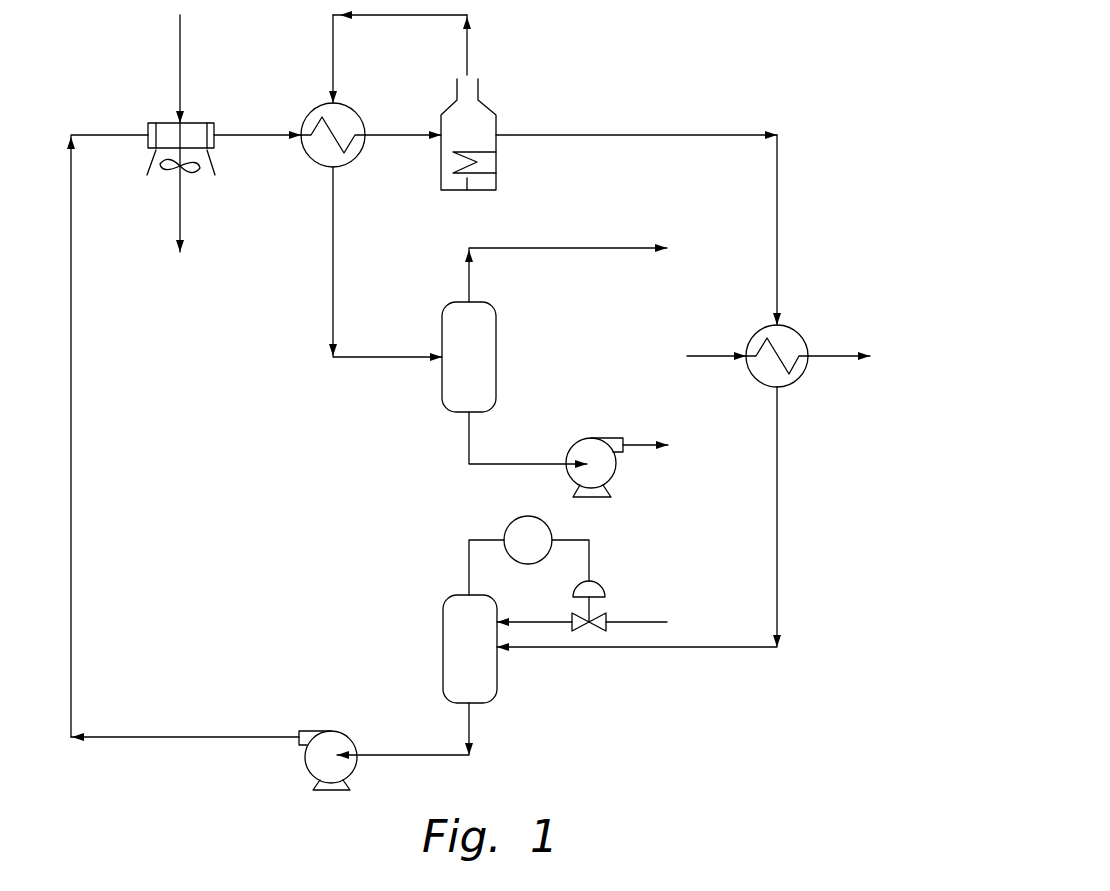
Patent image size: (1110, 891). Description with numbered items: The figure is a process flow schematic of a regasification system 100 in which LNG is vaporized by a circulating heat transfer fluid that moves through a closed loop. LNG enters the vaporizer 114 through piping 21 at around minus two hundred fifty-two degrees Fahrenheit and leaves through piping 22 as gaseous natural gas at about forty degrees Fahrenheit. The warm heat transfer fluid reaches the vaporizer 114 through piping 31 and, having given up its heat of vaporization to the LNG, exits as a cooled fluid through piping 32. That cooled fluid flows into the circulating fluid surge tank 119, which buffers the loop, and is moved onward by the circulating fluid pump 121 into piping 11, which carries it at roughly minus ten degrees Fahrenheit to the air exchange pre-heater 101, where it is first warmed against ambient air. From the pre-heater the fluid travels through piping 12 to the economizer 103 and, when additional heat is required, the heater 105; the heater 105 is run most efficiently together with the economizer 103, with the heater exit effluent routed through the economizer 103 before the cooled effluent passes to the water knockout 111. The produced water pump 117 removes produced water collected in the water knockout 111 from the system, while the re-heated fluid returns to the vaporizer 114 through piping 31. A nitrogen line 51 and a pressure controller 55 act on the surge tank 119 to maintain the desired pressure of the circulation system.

The regasification system 100 is at (704, 37).
The piping 11 is at (123, 133).
The piping 12 is at (253, 133).
The piping 21 is at (708, 355).
The piping 22 is at (838, 355).
The piping 31 is at (777, 190).
The piping 32 is at (777, 531).
The nitrogen line 51 is at (645, 620).
The pressure controller 55 is at (510, 522).
The air exchange pre-heater 101 is at (195, 120).
The economizer 103 is at (306, 161).
The heater 105 is at (497, 181).
The water knockout 111 is at (497, 334).
The vaporizer 114 is at (753, 378).
The produced water pump 117 is at (594, 438).
The circulating fluid surge tank 119 is at (443, 626).
The circulating fluid pump 121 is at (327, 731).